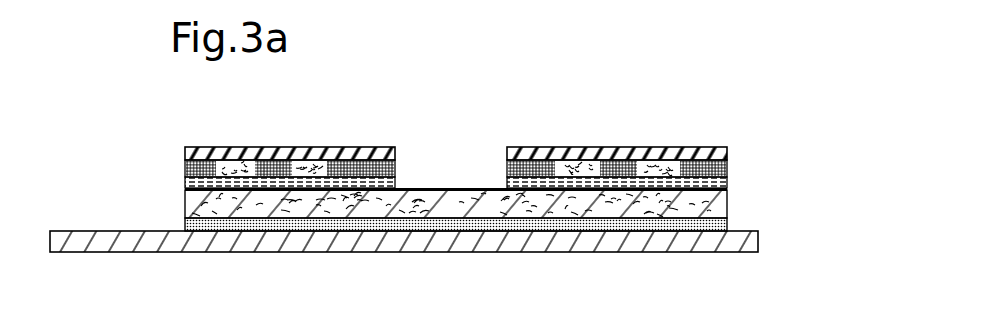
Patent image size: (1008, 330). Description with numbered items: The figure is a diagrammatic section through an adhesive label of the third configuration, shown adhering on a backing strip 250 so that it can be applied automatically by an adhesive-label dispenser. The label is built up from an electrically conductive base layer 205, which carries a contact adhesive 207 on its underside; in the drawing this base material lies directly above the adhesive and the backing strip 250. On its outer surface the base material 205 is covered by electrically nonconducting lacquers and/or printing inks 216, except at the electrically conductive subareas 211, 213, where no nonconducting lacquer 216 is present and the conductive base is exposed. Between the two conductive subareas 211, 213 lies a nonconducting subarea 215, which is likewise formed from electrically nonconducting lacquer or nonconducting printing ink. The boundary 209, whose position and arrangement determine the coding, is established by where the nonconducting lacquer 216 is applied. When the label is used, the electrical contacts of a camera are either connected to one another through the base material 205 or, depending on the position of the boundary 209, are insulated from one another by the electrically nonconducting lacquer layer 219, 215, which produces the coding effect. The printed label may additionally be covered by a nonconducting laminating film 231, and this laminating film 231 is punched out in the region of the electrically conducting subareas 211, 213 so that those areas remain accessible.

The electrically conductive base layer 205 is at (727, 201).
The contact adhesive 207 is at (727, 222).
The boundary 209 is at (398, 158).
The electrically conductive subarea 211 is at (455, 177).
The electrically conductive subarea 213 is at (456, 125).
The nonconducting subarea 215 is at (727, 187).
The electrically nonconducting lacquer or printing ink 216 is at (727, 170).
The electrically nonconducting lacquer layer 219 is at (692, 162).
The nonconducting laminating film 231 is at (683, 148).
The backing strip 250 is at (702, 242).